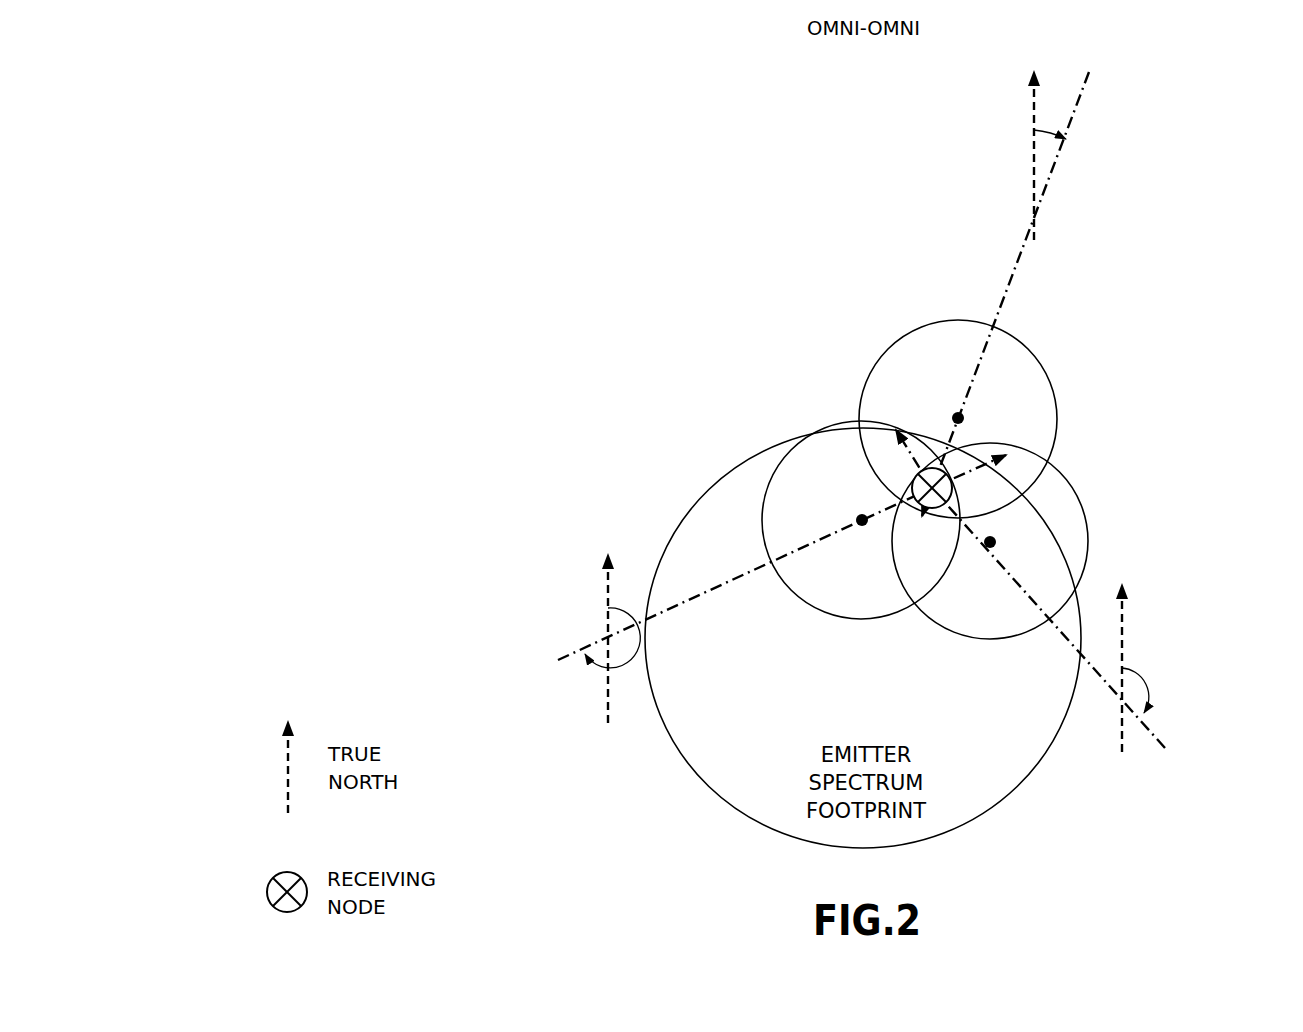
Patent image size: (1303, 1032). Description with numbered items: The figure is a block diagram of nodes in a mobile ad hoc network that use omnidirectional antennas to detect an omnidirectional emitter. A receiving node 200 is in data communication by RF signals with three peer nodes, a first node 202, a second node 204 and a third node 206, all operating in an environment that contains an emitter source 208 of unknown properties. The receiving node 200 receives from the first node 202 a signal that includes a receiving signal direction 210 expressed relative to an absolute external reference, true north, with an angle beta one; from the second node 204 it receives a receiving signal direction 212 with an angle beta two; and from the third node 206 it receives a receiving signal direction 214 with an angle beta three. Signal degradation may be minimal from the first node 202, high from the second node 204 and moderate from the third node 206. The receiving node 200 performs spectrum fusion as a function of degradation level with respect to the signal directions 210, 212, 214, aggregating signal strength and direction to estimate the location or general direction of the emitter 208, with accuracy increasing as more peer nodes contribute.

The receiving node 200 is at (950, 474).
The first node 202 is at (961, 415).
The second node 204 is at (862, 516).
The third node 206 is at (993, 538).
The emitter source 208 is at (1004, 779).
The receiving signal direction 210 is at (1074, 150).
The receiving signal direction 212 is at (554, 622).
The receiving signal direction 214 is at (1194, 679).